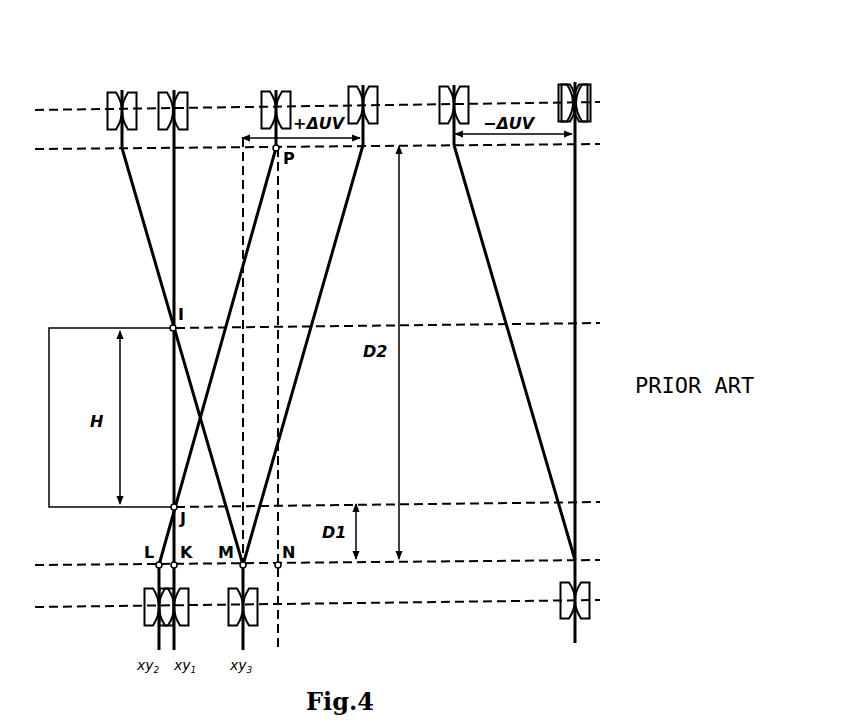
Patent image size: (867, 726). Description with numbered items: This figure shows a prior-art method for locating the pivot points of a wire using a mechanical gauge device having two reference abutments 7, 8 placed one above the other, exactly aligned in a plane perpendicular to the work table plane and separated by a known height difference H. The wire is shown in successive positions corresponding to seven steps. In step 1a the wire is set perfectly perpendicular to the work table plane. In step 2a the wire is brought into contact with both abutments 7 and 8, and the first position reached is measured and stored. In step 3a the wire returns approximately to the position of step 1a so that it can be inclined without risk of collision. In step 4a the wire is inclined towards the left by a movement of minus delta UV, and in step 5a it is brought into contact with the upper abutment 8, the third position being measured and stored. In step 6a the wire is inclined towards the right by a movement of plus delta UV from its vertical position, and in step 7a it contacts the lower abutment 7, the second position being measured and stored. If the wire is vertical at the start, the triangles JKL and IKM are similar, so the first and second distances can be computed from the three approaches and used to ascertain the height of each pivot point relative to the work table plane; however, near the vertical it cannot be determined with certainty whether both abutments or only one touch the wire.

The step 1a is at (573, 316).
The step 2a is at (173, 364).
The step 3a is at (574, 88).
The step 4a is at (454, 108).
The step 5a is at (122, 113).
The step 6a is at (363, 108).
The step 7a is at (276, 113).
The reference abutment 7 is at (172, 477).
The reference abutment 8 is at (140, 477).